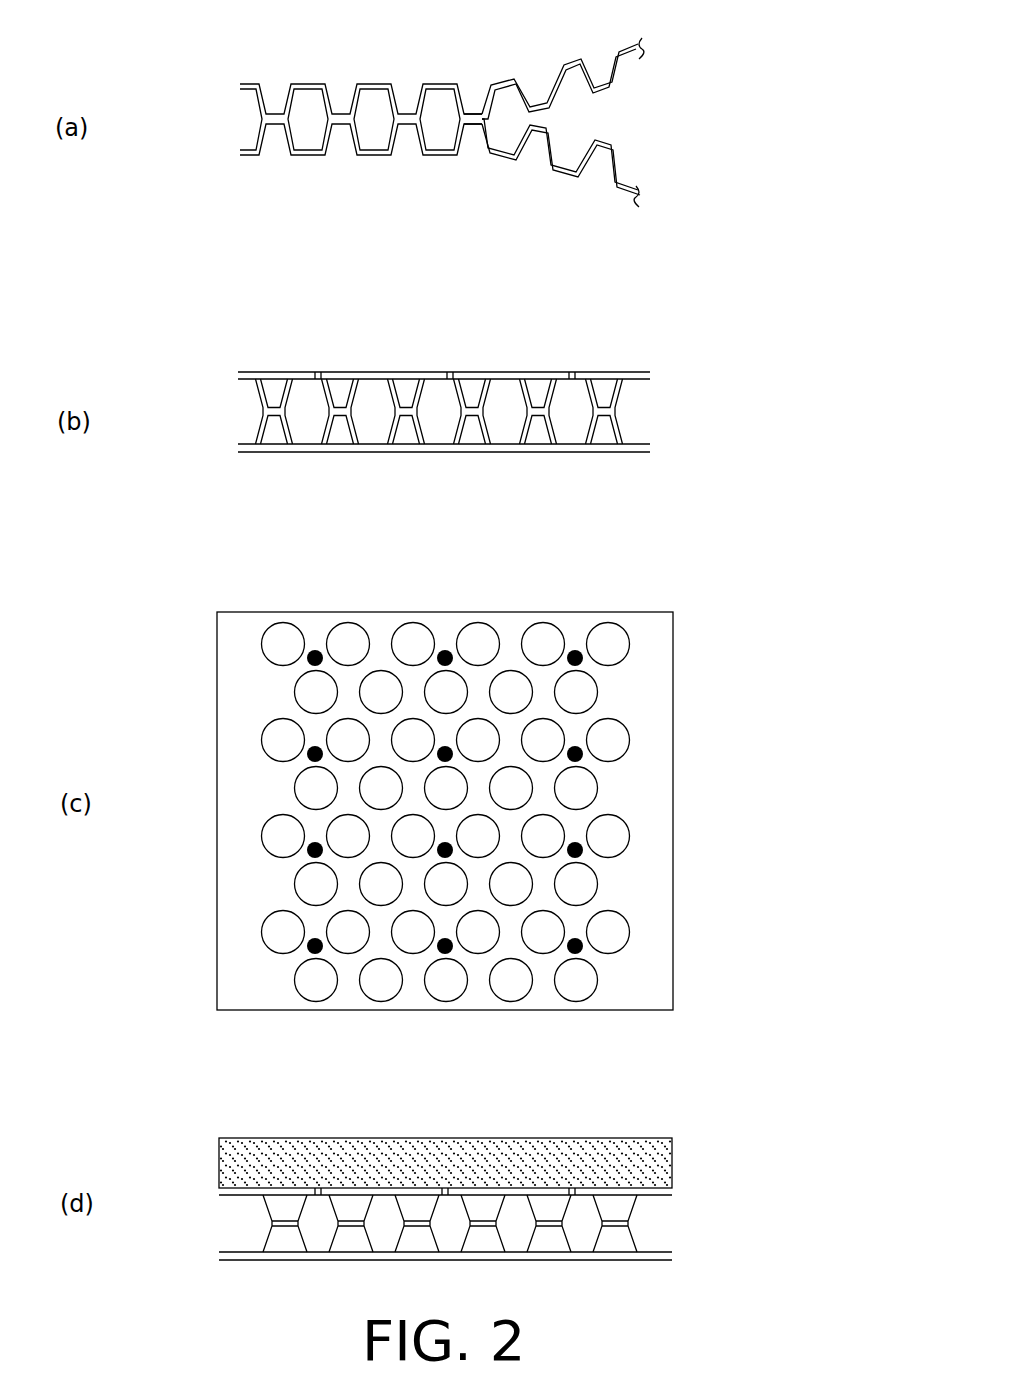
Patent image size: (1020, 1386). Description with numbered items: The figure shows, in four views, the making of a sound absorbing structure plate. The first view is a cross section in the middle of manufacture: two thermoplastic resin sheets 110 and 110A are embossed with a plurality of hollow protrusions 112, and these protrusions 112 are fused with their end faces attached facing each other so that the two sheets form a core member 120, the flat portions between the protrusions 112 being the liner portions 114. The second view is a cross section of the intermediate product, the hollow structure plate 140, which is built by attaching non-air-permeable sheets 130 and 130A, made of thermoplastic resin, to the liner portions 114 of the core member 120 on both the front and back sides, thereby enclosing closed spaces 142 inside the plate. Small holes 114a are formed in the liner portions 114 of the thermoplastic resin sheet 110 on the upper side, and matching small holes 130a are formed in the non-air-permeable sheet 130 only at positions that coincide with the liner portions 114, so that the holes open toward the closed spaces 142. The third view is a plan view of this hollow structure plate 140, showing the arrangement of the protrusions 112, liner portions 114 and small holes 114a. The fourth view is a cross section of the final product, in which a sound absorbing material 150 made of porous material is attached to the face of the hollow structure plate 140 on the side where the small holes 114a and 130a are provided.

The thermoplastic resin sheet 110 is at (616, 98).
The thermoplastic resin sheet 110A is at (616, 142).
The hollow protrusion 112 is at (550, 128).
The liner portion 114 is at (373, 83).
The small hole 114a is at (328, 379).
The core member 120 is at (216, 134).
The non-air-permeable sheet 130 is at (270, 372).
The non-air-permeable sheet 130A is at (273, 452).
The small hole 130a is at (318, 372).
The hollow structure plate 140 is at (609, 330).
The closed space 142 is at (570, 428).
The sound absorbing material 150 is at (672, 1160).